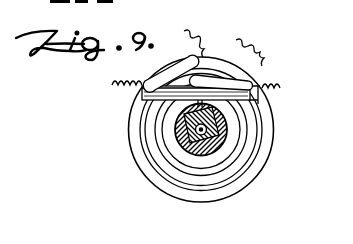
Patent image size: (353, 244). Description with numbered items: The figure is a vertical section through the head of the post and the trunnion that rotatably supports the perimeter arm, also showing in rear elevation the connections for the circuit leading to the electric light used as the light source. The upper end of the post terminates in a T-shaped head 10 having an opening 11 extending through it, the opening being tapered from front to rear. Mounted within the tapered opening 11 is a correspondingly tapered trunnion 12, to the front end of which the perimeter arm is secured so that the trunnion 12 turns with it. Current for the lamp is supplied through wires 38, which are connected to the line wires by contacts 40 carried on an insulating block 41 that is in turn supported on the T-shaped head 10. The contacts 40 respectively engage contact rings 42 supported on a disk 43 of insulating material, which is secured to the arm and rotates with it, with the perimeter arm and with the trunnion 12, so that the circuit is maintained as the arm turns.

The T-shaped head 10 is at (177, 147).
The opening 11 is at (190, 151).
The trunnion 12 is at (193, 156).
The wires 38 is at (195, 44).
The contacts 40 is at (182, 62).
The insulating block 41 is at (143, 87).
The contact rings 42 is at (238, 158).
The disk of insulating material 43 is at (230, 177).